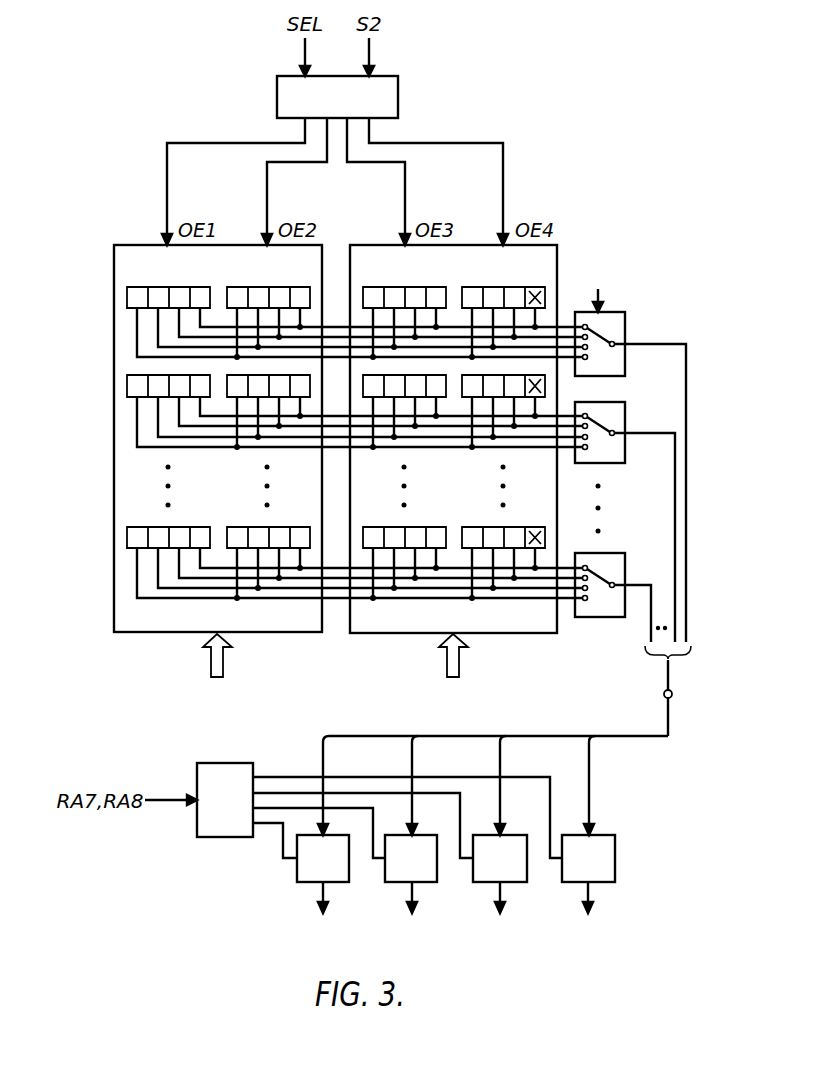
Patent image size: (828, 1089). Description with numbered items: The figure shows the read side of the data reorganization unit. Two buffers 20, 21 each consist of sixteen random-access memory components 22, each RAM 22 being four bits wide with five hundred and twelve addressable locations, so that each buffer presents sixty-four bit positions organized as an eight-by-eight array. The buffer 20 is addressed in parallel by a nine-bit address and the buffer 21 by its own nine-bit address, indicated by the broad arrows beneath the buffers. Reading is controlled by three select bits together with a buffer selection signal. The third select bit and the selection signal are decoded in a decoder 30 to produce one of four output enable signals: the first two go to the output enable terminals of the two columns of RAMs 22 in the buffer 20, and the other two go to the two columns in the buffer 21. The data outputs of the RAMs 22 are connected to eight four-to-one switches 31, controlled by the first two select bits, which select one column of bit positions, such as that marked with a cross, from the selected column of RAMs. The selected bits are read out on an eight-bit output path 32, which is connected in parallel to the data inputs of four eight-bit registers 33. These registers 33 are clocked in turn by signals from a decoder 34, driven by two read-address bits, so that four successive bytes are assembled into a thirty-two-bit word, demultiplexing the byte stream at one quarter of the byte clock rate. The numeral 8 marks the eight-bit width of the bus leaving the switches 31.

The eight-bit data bus 8 is at (676, 698).
The buffer 20 is at (157, 634).
The buffer 21 is at (522, 635).
The random-access memory component 22 is at (235, 286).
The decoder 30 is at (277, 106).
The 4:1 switch 31 is at (626, 324).
The 8-bit output path 32 is at (620, 738).
The 8-bit register 33 is at (349, 867).
The decoder 34 is at (219, 838).